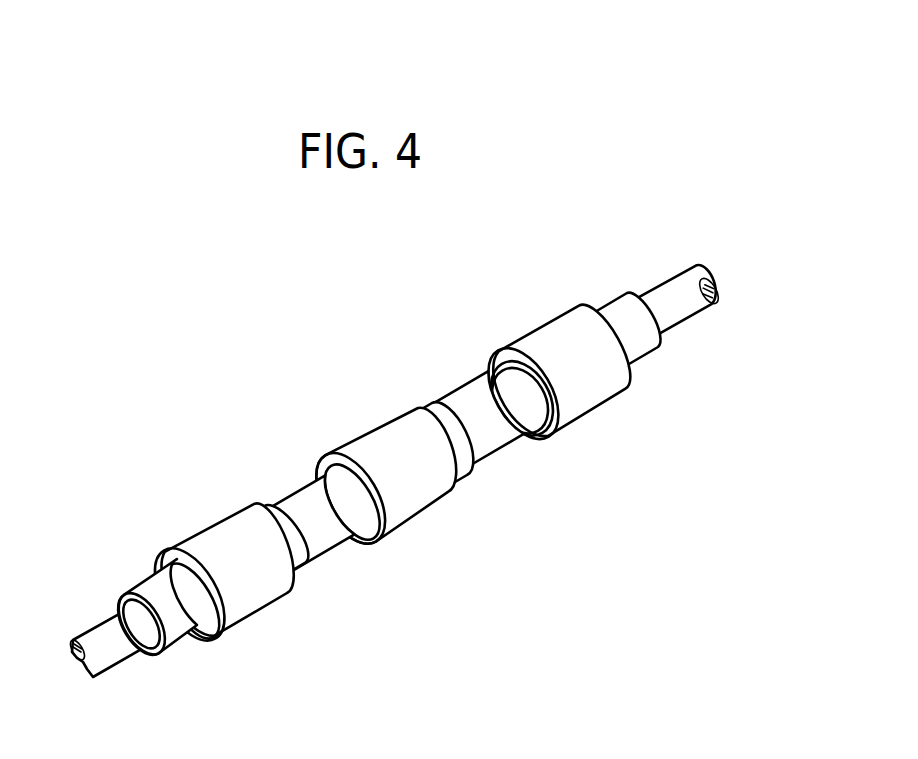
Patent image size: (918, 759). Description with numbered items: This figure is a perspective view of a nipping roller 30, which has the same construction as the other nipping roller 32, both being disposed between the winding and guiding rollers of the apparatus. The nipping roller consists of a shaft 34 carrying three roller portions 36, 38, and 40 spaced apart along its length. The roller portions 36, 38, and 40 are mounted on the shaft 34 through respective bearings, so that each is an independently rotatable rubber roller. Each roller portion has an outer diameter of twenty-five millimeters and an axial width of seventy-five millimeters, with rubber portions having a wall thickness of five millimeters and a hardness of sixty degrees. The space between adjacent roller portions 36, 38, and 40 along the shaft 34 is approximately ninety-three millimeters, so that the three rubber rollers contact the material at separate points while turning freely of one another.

The nipping roller 30 is at (291, 446).
The nipping roller 32 is at (395, 470).
The shaft 34 is at (465, 402).
The roller portion 36 is at (207, 538).
The roller portion 38 is at (372, 425).
The roller portion 40 is at (537, 332).